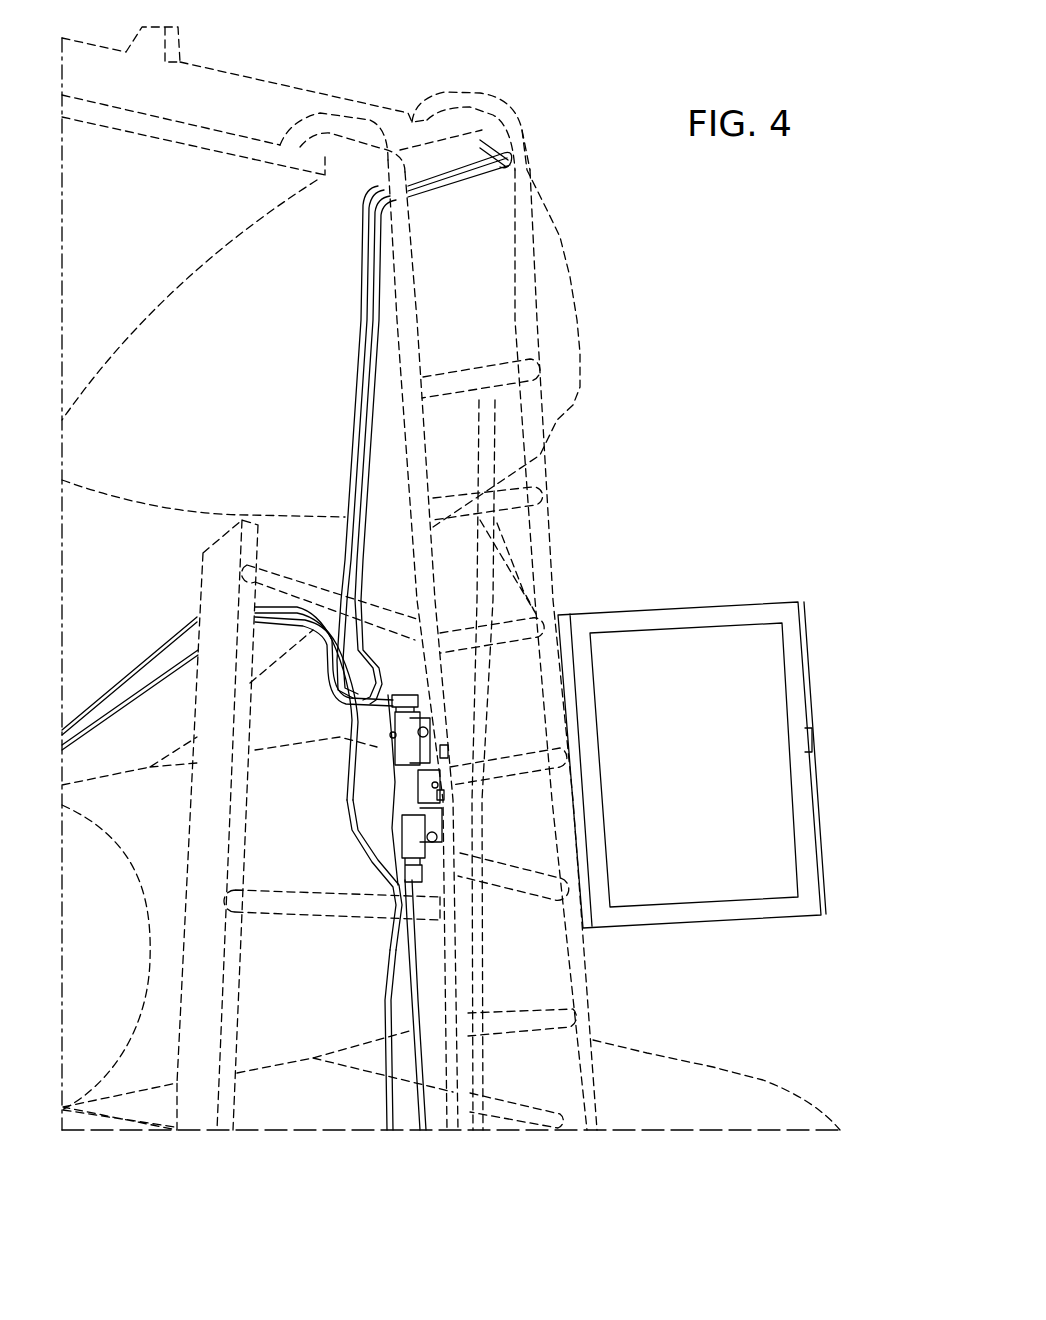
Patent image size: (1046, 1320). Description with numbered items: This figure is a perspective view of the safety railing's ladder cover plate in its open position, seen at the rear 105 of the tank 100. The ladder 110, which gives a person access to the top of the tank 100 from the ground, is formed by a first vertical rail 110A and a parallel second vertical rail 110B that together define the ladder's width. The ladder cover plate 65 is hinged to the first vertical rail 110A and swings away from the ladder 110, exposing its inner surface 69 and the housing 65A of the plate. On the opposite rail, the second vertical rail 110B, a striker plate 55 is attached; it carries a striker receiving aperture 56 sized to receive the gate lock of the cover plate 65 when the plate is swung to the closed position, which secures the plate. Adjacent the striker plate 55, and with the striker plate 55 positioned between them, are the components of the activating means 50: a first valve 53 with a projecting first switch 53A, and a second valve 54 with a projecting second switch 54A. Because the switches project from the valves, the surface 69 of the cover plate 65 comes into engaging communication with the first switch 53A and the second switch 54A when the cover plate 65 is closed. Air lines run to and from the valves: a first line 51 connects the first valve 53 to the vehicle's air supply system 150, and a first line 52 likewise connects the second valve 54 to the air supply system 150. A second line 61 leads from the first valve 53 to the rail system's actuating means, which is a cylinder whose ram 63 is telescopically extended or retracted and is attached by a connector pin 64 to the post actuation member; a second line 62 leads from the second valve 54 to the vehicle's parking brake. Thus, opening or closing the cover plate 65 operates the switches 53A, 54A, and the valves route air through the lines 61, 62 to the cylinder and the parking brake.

The tank 100 is at (562, 338).
The rear of the tank 105 is at (545, 250).
The ladder 110 is at (483, 98).
The first vertical rail 110A is at (528, 184).
The second vertical rail 110B is at (393, 172).
The air supply system 150 is at (103, 1030).
The activating means 50 is at (448, 752).
The first line of the first valve 51 is at (340, 697).
The first line of the second valve 52 is at (370, 863).
The first valve 53 is at (405, 718).
The first switch 53A is at (428, 742).
The second valve 54 is at (420, 859).
The second switch 54A is at (433, 834).
The striker plate 55 is at (473, 730).
The striker receiving aperture 56 is at (437, 795).
The second line of the first valve 61 is at (345, 545).
The second line of the second valve 62 is at (380, 997).
The ram 63 is at (365, 553).
The connector pin 64 is at (417, 1027).
The ladder cover plate 65 is at (655, 655).
The display housing 65A is at (801, 760).
The surface of the ladder cover plate 69 is at (800, 778).